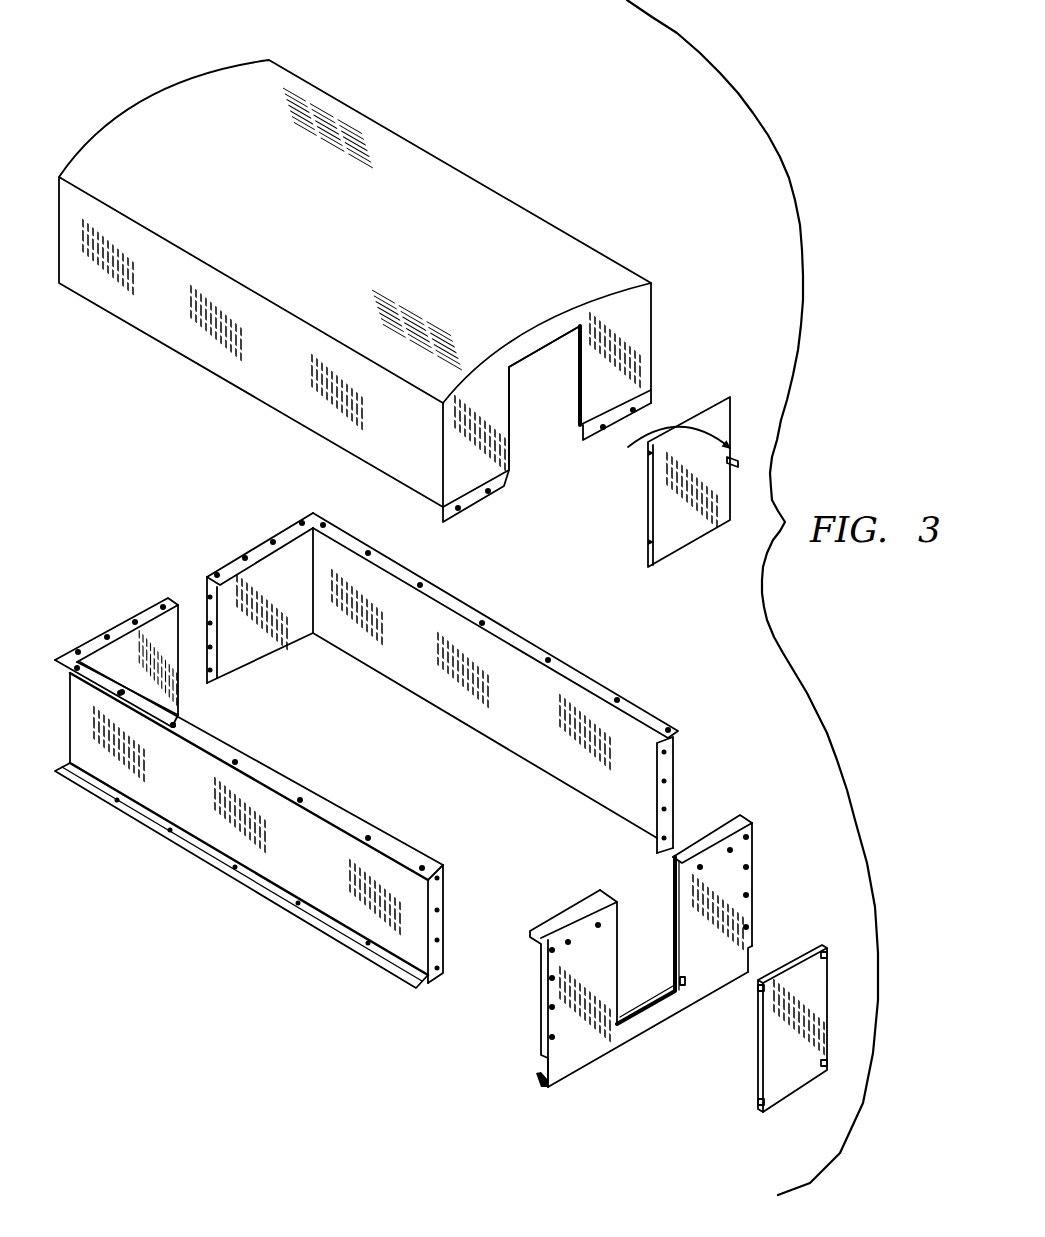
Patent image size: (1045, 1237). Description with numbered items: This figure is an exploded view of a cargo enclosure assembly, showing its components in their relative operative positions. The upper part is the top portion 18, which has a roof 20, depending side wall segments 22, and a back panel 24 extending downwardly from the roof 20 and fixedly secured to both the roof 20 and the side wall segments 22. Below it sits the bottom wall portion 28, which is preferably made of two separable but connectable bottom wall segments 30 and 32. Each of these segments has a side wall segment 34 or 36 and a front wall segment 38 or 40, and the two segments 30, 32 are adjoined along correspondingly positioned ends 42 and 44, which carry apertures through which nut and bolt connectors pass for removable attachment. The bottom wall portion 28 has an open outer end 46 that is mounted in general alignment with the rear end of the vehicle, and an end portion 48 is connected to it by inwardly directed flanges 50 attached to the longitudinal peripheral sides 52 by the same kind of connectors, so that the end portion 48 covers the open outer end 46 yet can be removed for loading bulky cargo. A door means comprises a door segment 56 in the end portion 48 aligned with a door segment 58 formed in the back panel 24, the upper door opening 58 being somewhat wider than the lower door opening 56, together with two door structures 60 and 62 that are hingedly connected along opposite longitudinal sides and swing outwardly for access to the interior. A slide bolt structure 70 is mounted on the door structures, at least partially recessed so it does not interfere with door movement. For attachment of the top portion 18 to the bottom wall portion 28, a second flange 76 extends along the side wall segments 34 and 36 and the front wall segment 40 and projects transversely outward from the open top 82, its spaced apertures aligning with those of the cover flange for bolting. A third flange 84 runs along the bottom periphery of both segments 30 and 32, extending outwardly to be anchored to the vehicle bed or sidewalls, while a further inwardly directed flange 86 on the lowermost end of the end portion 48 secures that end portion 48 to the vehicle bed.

The top portion 18 is at (403, 291).
The roof 20 is at (300, 212).
The side wall segments 22 is at (273, 378).
The back panel 24 is at (637, 307).
The bottom wall portion 28 is at (648, 643).
The bottom wall segment 30 is at (259, 579).
The bottom wall segment 32 is at (157, 633).
The side wall segment 34 is at (495, 675).
The side wall segment 36 is at (312, 882).
The front wall segment 38 is at (275, 640).
The front wall segment 40 is at (181, 706).
The end 42 is at (208, 612).
The end 44 is at (182, 660).
The open outer end 46 is at (520, 827).
The end portion 48 is at (757, 848).
The inwardly directed flanges 50 is at (446, 906).
The longitudinal peripheral sides 52 is at (542, 1008).
The door segment 56 is at (618, 932).
The door segment 58 is at (509, 393).
The door structure 60 is at (782, 1072).
The door structure 62 is at (668, 508).
The slide bolt structure 70 is at (660, 450).
The second flange 76 is at (148, 612).
The open top 82 is at (478, 632).
The third flange 84 is at (167, 832).
The inwardly directed flange 86 is at (528, 1080).